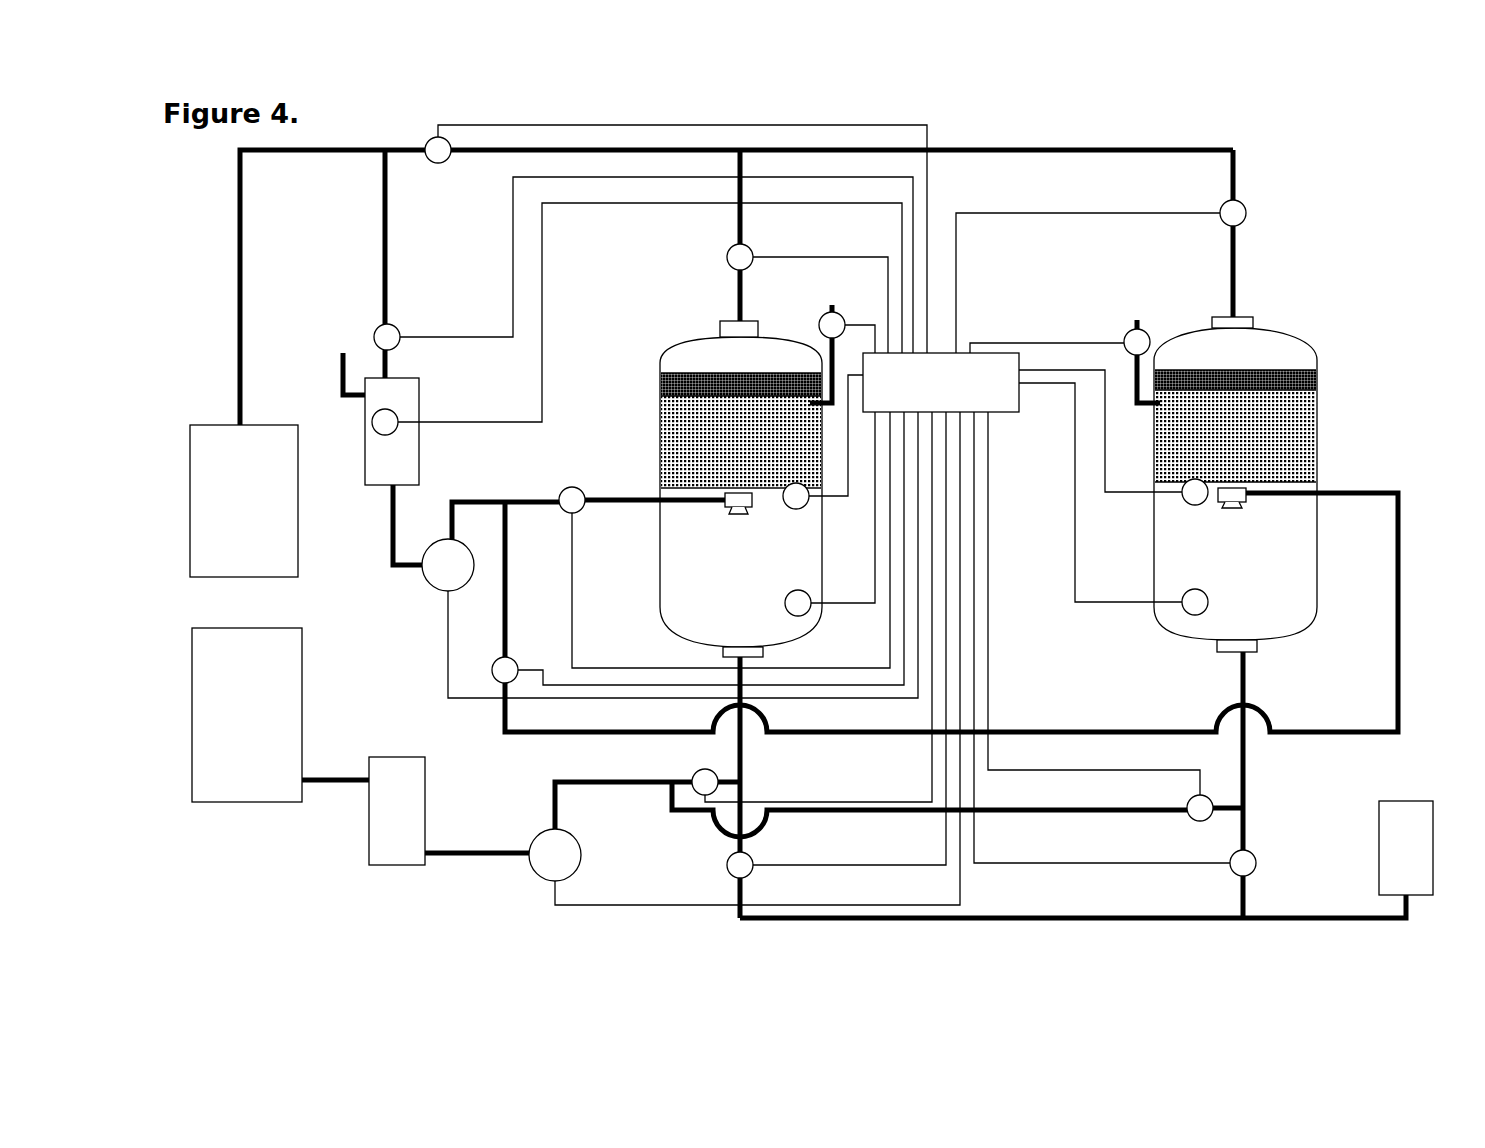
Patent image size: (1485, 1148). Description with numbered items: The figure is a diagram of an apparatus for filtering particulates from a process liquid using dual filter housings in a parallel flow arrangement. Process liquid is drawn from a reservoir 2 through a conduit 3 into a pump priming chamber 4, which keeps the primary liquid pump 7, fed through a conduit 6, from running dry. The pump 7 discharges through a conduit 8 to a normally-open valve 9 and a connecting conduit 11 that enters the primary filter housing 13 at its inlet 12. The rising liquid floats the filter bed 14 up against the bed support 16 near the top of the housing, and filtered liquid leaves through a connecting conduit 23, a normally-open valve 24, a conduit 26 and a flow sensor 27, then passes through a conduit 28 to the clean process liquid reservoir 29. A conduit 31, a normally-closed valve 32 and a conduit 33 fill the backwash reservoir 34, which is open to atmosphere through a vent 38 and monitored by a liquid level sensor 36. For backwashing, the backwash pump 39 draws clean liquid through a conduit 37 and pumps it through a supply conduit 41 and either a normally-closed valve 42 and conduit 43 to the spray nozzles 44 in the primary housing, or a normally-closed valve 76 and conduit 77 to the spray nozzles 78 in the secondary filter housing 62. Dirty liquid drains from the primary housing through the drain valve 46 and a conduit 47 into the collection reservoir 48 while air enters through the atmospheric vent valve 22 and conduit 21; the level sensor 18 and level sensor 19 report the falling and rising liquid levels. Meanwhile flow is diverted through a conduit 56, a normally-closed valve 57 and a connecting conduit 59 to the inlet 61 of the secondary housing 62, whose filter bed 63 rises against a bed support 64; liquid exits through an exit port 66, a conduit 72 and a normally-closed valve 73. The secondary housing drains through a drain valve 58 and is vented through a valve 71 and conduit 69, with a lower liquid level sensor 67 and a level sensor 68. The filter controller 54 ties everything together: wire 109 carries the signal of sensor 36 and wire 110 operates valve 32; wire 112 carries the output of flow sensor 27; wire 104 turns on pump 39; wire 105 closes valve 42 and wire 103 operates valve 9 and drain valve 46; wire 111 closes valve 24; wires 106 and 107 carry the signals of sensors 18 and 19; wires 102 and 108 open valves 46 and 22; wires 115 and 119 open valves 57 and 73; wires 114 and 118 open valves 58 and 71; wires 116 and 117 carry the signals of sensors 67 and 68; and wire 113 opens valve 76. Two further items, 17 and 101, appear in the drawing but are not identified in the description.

The reservoir 2 is at (258, 812).
The conduit 3 is at (338, 770).
The pump priming chamber 4 is at (428, 797).
The conduit 6 is at (463, 845).
The primary liquid pump 7 is at (530, 872).
The conduit 8 is at (585, 795).
The normally-open valve 9 is at (688, 772).
The connecting conduit 11 is at (752, 763).
The filter housing inlet 12 is at (712, 652).
The filter housing 13 is at (660, 615).
The bed 14 is at (700, 420).
The bed support 16 is at (700, 388).
The top fitting 17 is at (718, 326).
The level sensor 18 is at (812, 614).
The level sensor 19 is at (780, 486).
The conduit 21 is at (825, 358).
The atmospheric vent valve 22 is at (818, 314).
The connecting conduit 23 is at (738, 300).
The normally-open valve 24 is at (722, 257).
The connecting conduit 26 is at (735, 222).
The flow sensor 27 is at (438, 172).
The conduit 28 is at (225, 199).
The clean process liquid reservoir 29 is at (214, 416).
The conduit 31 is at (368, 228).
The normally-closed valve 32 is at (403, 327).
The conduit 33 is at (405, 356).
The backwash reservoir 34 is at (358, 415).
The liquid level sensor 36 is at (395, 435).
The conduit 37 is at (383, 530).
The vent 38 is at (355, 383).
The backwash pump 39 is at (420, 590).
The supply conduit 41 is at (487, 495).
The normally-closed valve 42 is at (590, 515).
The conduit 43 is at (625, 495).
The backwash spray nozzle 44 is at (725, 507).
The drain valve 46 is at (770, 845).
The conduit 47 is at (1048, 905).
The collection reservoir 48 is at (1408, 800).
The filter controller 54 is at (1008, 418).
The conduit 56 is at (1020, 815).
The normally-closed valve 57 is at (1185, 815).
The drain valve 58 is at (1258, 855).
The connecting conduit 59 is at (1258, 777).
The filter housing inlet 61 is at (1262, 657).
The secondary filter housing 62 is at (1322, 622).
The secondary filter bed 63 is at (1290, 450).
The bed support 64 is at (1295, 375).
The exit port 66 is at (1258, 315).
The lower liquid level sensor 67 is at (1192, 620).
The level sensor 68 is at (1182, 503).
The conduit 69 is at (1140, 407).
The atmospheric vent valve 71 is at (1122, 330).
The connecting conduit 72 is at (1225, 272).
The normally-closed valve 73 is at (1215, 205).
The normally-closed valve 76 is at (492, 652).
The conduit 77 is at (1122, 720).
The backwash spray nozzle 78 is at (1250, 505).
The control line 101 is at (708, 893).
The wire 102 is at (940, 836).
The wire 103 is at (920, 773).
The wire 104 is at (440, 668).
The wire 105 is at (583, 590).
The wire 106 is at (840, 598).
The wire 107 is at (838, 505).
The wire 108 is at (857, 315).
The wire 109 is at (530, 393).
The wire 110 is at (493, 257).
The wire 111 is at (797, 253).
The wire 112 is at (935, 128).
The wire 113 is at (527, 662).
The wire 114 is at (1125, 870).
The wire 115 is at (997, 752).
The wire 116 is at (1090, 610).
The wire 117 is at (1120, 498).
The wire 118 is at (1060, 335).
The wire 119 is at (963, 248).